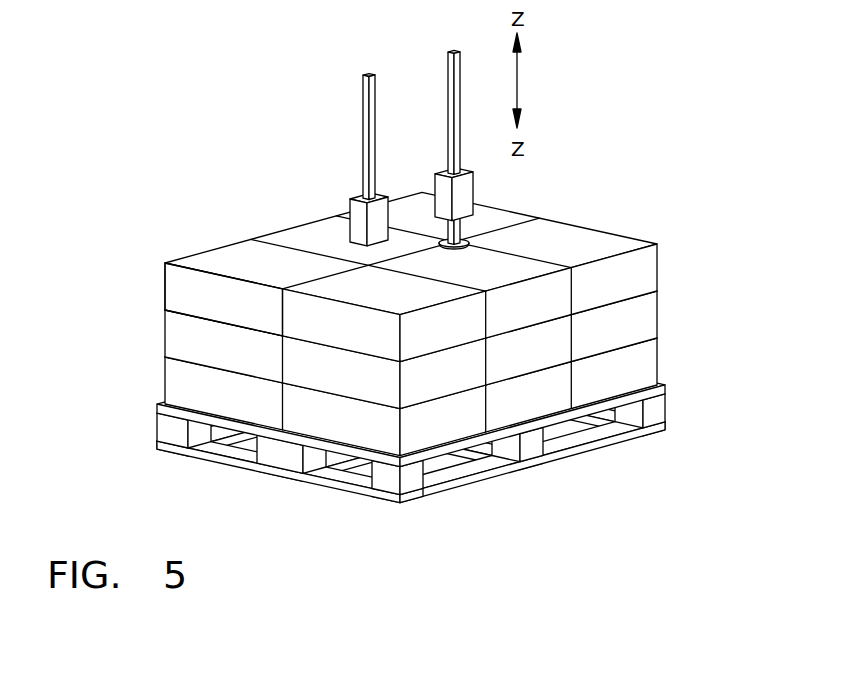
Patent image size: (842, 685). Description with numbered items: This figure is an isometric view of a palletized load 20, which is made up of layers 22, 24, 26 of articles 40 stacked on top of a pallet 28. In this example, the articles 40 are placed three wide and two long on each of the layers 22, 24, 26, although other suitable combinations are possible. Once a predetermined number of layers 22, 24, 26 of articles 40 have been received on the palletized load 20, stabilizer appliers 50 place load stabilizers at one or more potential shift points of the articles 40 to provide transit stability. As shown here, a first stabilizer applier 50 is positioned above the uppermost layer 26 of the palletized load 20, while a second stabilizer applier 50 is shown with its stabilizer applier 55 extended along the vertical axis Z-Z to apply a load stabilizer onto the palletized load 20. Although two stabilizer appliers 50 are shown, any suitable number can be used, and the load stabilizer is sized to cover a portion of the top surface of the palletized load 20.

The palletized load 20 is at (398, 347).
The layer 22 is at (634, 372).
The layer 24 is at (634, 323).
The uppermost layer 26 is at (634, 275).
The pallet 28 is at (655, 411).
The article 40 is at (195, 290).
The stabilizer applier 50 is at (350, 213).
The stabilizer applier 55 is at (468, 242).